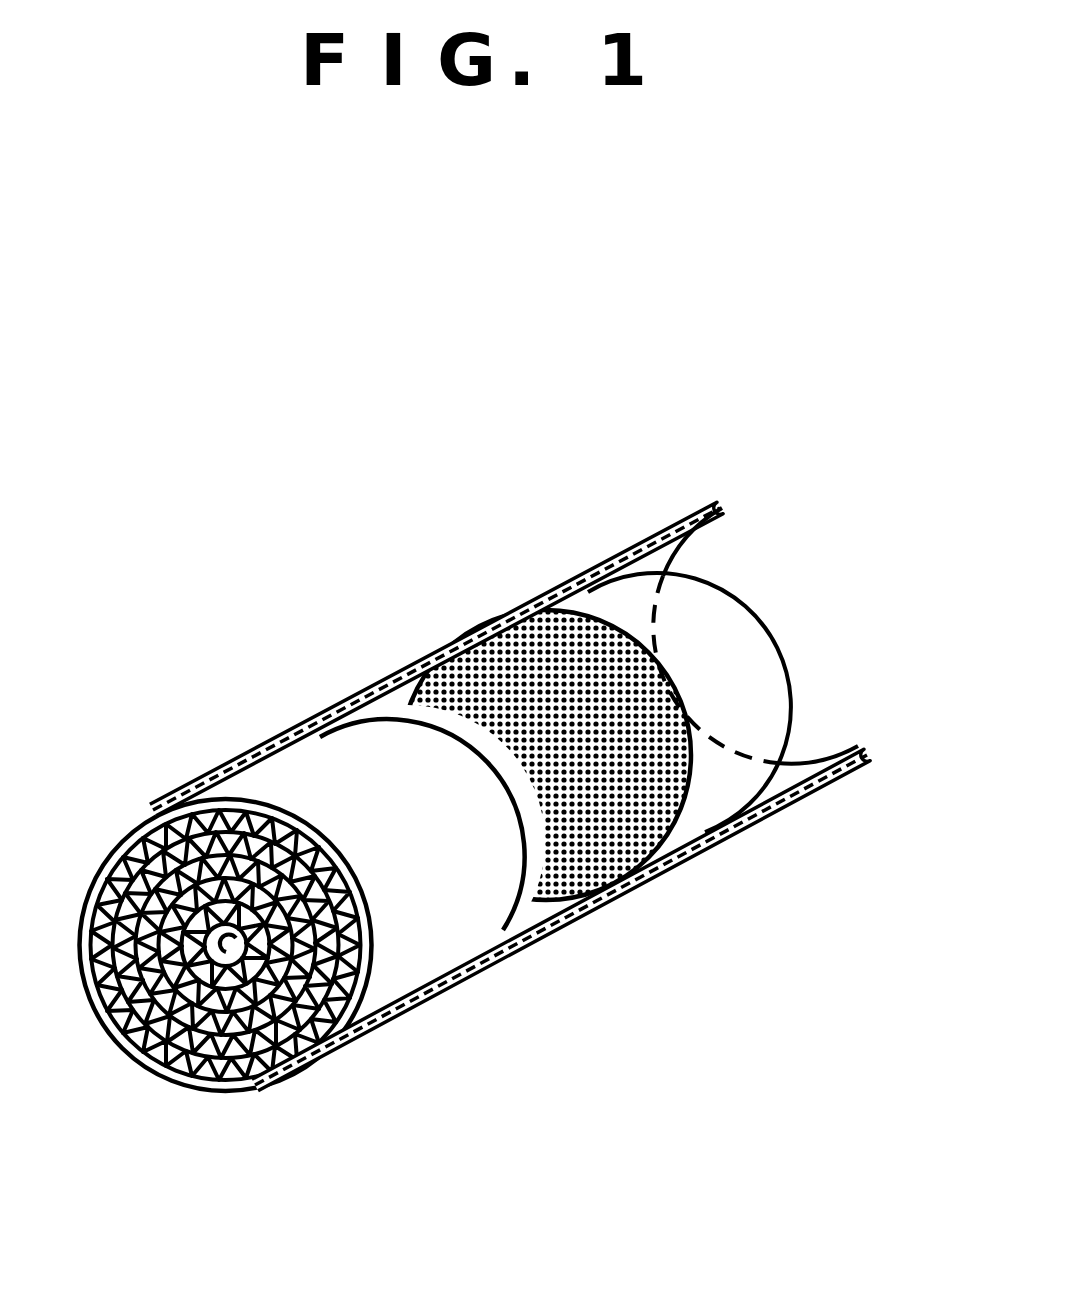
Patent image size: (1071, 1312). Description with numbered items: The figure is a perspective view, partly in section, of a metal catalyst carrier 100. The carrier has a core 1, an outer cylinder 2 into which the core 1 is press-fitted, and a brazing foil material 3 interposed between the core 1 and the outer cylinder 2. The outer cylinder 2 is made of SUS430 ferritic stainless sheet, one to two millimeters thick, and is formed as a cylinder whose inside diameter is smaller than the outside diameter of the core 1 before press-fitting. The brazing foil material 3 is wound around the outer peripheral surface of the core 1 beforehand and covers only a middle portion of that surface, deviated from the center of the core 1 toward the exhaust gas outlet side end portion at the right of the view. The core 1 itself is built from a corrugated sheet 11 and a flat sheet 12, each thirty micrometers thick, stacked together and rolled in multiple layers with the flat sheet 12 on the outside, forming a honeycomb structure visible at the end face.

The core 1 is at (760, 643).
The outer cylinder 2 is at (665, 528).
The brazing foil material 3 is at (480, 642).
The corrugated sheet 11 is at (285, 1082).
The flat sheet 12 is at (310, 766).
The metal catalyst carrier 100 is at (487, 777).